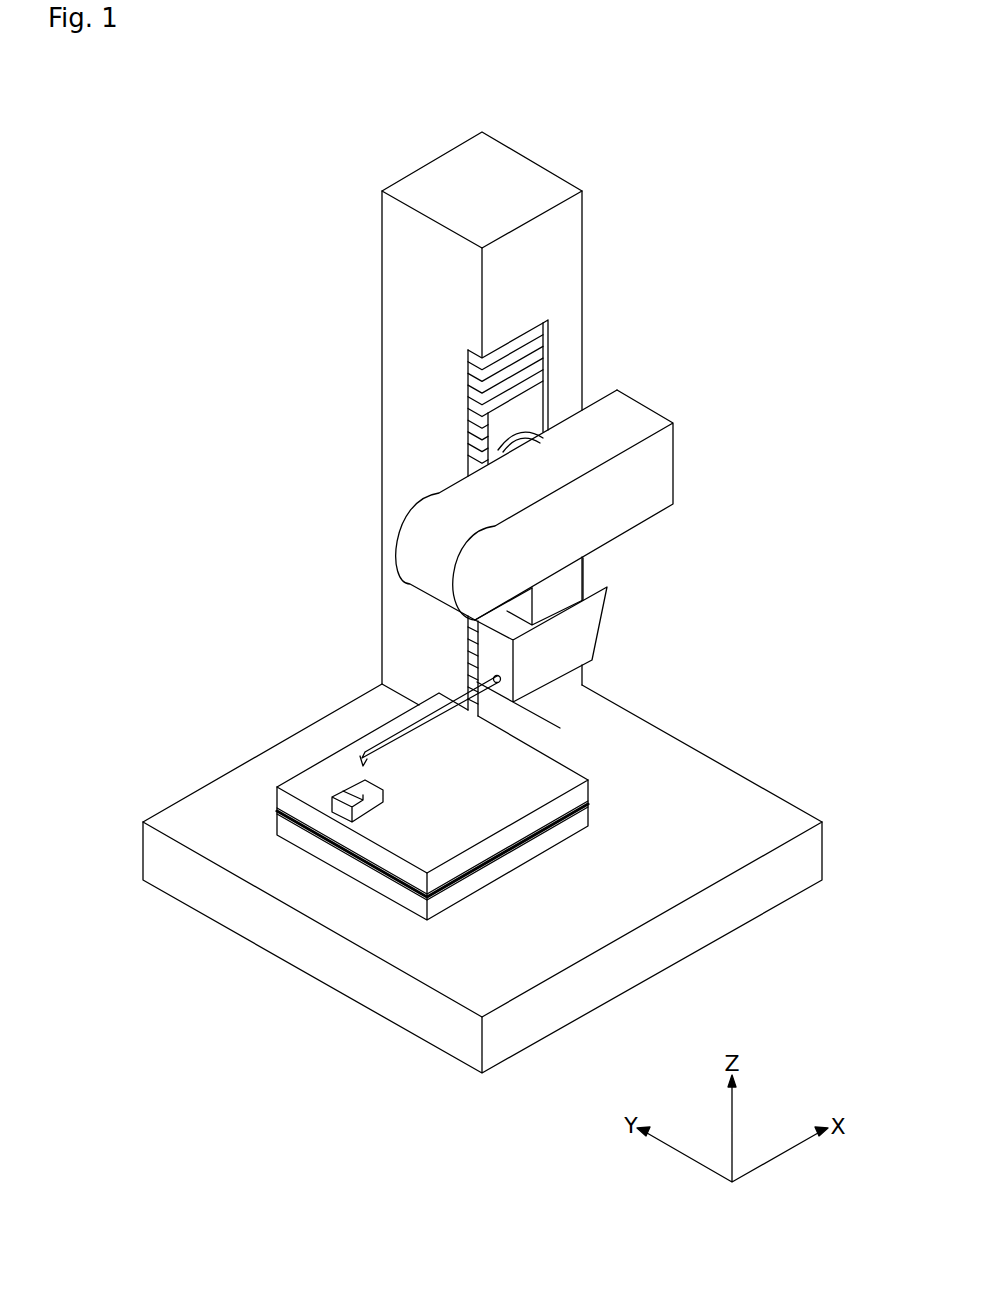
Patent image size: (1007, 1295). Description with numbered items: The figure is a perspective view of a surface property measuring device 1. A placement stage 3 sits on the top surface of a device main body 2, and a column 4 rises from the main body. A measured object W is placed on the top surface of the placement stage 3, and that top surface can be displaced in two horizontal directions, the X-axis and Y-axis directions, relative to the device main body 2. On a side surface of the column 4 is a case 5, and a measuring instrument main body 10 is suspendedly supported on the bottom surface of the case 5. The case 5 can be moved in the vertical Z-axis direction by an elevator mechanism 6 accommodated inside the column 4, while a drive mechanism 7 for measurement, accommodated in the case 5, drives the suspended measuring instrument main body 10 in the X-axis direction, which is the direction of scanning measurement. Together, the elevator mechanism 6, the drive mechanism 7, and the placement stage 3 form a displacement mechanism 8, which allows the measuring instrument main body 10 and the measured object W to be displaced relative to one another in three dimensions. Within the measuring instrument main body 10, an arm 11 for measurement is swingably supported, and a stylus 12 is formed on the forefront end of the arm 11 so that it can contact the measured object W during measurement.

The surface property measuring device 1 is at (730, 275).
The device main body 2 is at (710, 822).
The placement stage 3 is at (527, 760).
The column 4 is at (382, 219).
The case 5 is at (437, 527).
The elevator mechanism 6 is at (522, 412).
The drive mechanism 7 is at (572, 578).
The displacement mechanism 8 is at (730, 386).
The measuring instrument main body 10 is at (533, 658).
The arm 11 is at (383, 727).
The stylus 12 is at (353, 751).
The measured object W is at (343, 788).